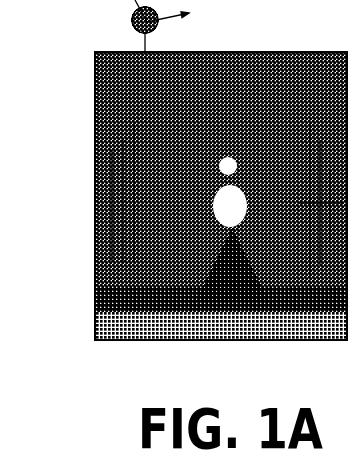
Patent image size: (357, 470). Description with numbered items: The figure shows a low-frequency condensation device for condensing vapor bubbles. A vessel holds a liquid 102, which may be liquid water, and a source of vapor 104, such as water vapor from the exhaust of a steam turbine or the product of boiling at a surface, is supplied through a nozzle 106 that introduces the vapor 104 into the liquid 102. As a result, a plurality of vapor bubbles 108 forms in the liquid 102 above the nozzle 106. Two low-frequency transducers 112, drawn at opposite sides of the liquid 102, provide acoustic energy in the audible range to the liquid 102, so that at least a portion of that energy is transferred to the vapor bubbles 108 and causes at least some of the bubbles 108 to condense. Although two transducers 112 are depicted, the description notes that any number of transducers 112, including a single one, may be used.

The liquid 102 is at (98, 84).
The vapor 104 is at (173, 328).
The nozzle 106 is at (238, 265).
The vapor bubbles 108 is at (213, 217).
The low-frequency transducers 112 is at (145, 203).